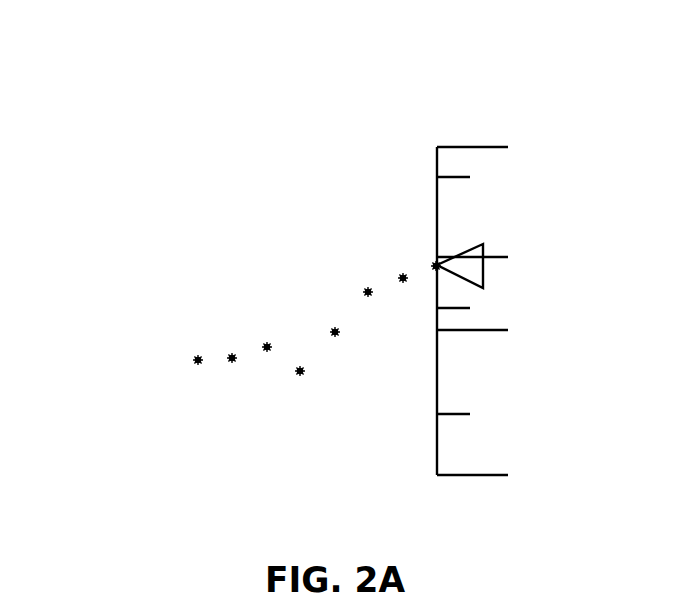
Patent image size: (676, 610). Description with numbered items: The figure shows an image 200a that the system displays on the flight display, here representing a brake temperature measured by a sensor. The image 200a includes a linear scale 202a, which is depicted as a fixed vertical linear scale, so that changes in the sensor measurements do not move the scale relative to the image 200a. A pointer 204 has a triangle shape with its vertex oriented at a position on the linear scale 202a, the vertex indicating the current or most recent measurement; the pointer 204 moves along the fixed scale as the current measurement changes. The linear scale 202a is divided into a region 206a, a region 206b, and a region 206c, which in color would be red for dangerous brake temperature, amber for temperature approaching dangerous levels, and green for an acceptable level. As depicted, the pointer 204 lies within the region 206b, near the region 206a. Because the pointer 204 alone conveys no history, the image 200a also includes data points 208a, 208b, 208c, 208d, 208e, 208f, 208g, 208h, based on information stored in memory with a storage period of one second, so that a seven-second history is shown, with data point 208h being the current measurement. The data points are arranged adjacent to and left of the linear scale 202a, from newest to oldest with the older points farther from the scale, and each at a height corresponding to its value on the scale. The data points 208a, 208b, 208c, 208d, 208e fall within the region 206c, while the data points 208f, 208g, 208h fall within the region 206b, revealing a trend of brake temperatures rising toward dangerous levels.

The image 200a is at (102, 40).
The linear scale 202a is at (458, 78).
The pointer 204 is at (483, 265).
The region 206a is at (470, 177).
The region 206b is at (470, 308).
The region 206c is at (470, 414).
The data point 208a is at (197, 367).
The data point 208b is at (229, 350).
The data point 208c is at (266, 355).
The data point 208d is at (299, 364).
The data point 208e is at (334, 339).
The data point 208f is at (367, 285).
The data point 208g is at (402, 285).
The data point 208h is at (437, 260).